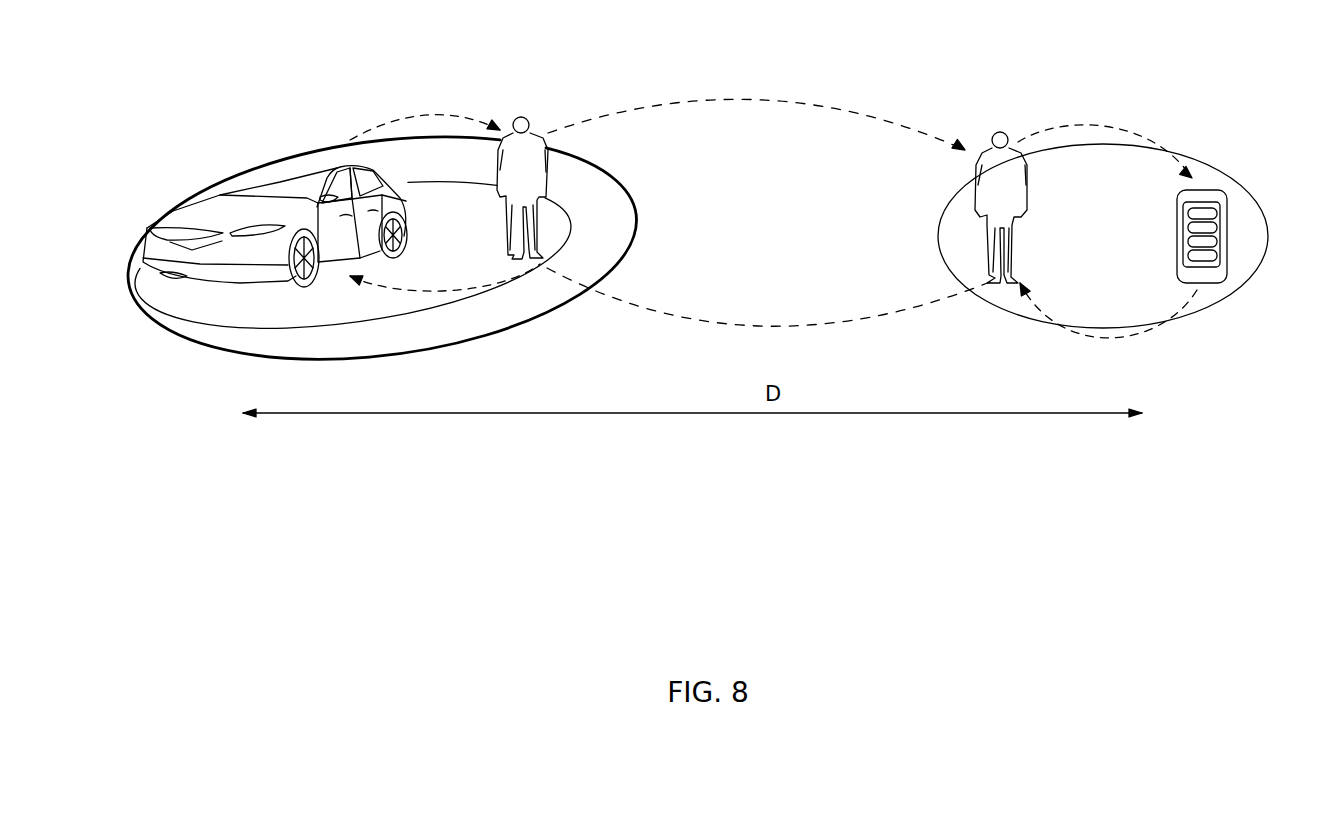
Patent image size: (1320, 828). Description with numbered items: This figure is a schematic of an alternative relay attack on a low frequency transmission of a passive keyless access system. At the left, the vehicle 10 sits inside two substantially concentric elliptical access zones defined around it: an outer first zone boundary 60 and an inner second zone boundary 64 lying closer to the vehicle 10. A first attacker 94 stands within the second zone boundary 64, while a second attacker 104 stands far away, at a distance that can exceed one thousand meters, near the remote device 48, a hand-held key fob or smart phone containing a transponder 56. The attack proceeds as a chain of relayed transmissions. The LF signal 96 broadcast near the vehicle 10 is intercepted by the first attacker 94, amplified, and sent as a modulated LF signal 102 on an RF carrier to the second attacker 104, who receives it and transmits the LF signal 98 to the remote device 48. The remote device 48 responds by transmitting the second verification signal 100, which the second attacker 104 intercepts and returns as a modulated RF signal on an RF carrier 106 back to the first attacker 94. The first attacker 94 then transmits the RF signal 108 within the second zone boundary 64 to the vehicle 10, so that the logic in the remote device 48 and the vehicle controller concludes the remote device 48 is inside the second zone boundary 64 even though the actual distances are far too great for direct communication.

The vehicle 10 is at (188, 217).
The remote device 48 is at (1213, 283).
The transponder 56 is at (1220, 188).
The first zone boundary 60 is at (228, 357).
The second zone boundary 64 is at (290, 324).
The first attacker 94 is at (523, 112).
The LF signal 96 is at (393, 118).
The LF signal 98 is at (1090, 126).
The second verification signal 100 is at (1128, 343).
The modulated LF signal 102 is at (763, 100).
The second attacker 104 is at (1002, 132).
The RF carrier 106 is at (790, 323).
The signal from first person to vehicle 108 is at (430, 276).